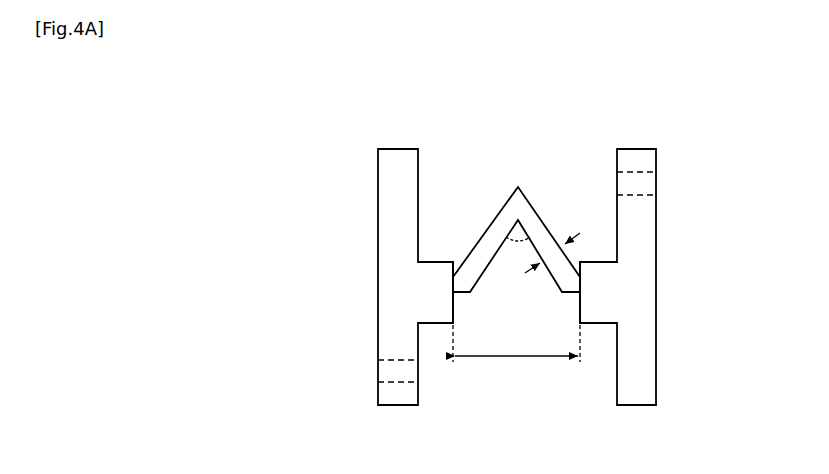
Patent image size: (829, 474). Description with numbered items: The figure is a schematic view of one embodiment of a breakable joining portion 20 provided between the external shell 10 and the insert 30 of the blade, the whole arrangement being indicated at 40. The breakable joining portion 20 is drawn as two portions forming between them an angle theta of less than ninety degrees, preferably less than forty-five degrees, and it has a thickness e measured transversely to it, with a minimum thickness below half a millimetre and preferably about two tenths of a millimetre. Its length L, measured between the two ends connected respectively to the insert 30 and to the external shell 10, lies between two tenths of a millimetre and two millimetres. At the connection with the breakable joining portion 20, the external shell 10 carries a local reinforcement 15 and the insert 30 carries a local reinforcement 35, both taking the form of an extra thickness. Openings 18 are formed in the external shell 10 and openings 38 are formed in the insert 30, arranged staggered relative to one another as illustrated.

The external shell 10 is at (397, 163).
The local reinforcement 15 is at (433, 295).
The openings 18 is at (385, 373).
The breakable joining portion 20 is at (508, 212).
The insert 30 is at (638, 162).
The local reinforcement 35 is at (602, 295).
The openings 38 is at (652, 183).
The spring unit 40 is at (516, 270).